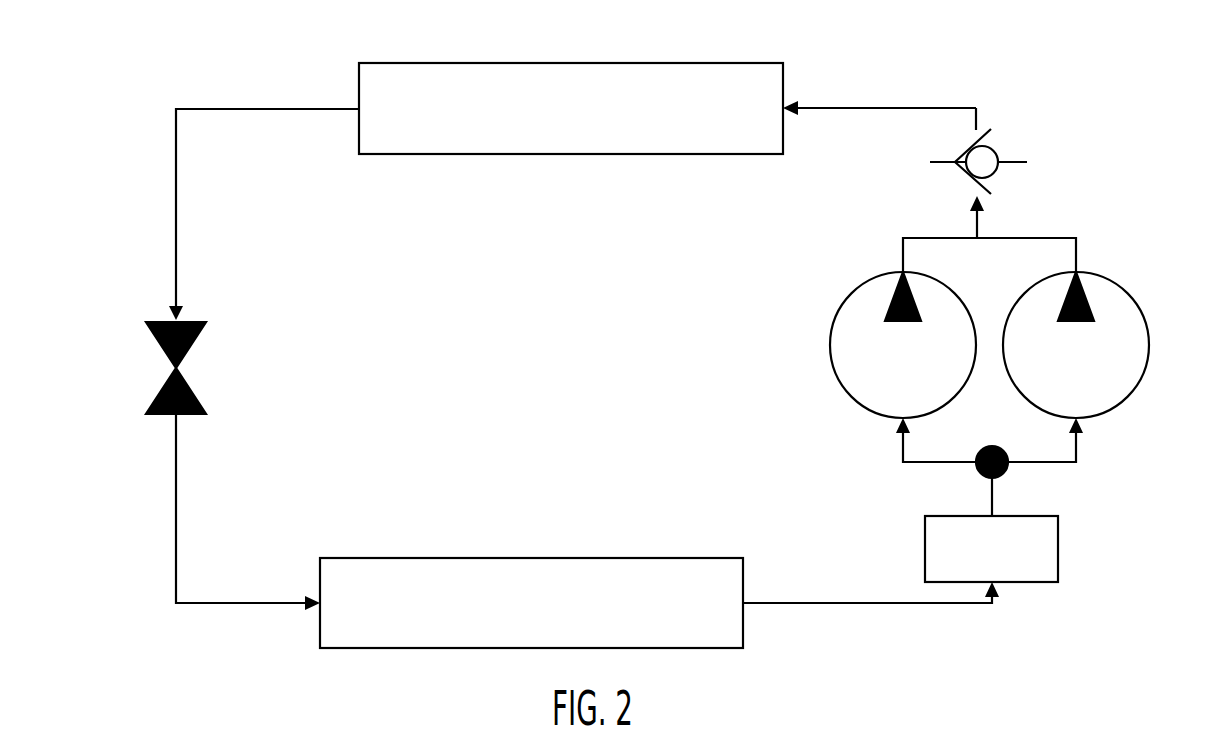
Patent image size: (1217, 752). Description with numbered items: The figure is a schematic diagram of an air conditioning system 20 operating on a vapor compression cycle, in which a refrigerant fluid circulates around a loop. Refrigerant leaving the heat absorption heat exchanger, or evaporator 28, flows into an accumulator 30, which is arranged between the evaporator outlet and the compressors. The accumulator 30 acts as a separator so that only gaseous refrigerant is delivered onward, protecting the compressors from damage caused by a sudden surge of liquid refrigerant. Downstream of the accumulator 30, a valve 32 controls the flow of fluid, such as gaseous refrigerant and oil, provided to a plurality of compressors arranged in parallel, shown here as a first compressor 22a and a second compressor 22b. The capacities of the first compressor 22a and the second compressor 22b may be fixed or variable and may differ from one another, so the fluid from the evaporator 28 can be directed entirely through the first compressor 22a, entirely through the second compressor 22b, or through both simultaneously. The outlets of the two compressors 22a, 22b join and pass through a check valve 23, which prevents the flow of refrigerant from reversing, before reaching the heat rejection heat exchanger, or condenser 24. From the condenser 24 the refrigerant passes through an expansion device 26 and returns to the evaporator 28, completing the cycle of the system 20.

The air conditioning system 20 is at (154, 104).
The first compressor 22a is at (1108, 395).
The second compressor 22b is at (867, 393).
The check valve 23 is at (987, 153).
The heat rejection heat exchanger (condenser) 24 is at (694, 70).
The expansion device 26 is at (160, 343).
The heat absorption heat exchanger (evaporator) 28 is at (654, 567).
The accumulator 30 is at (1004, 560).
The valve 32 is at (977, 468).